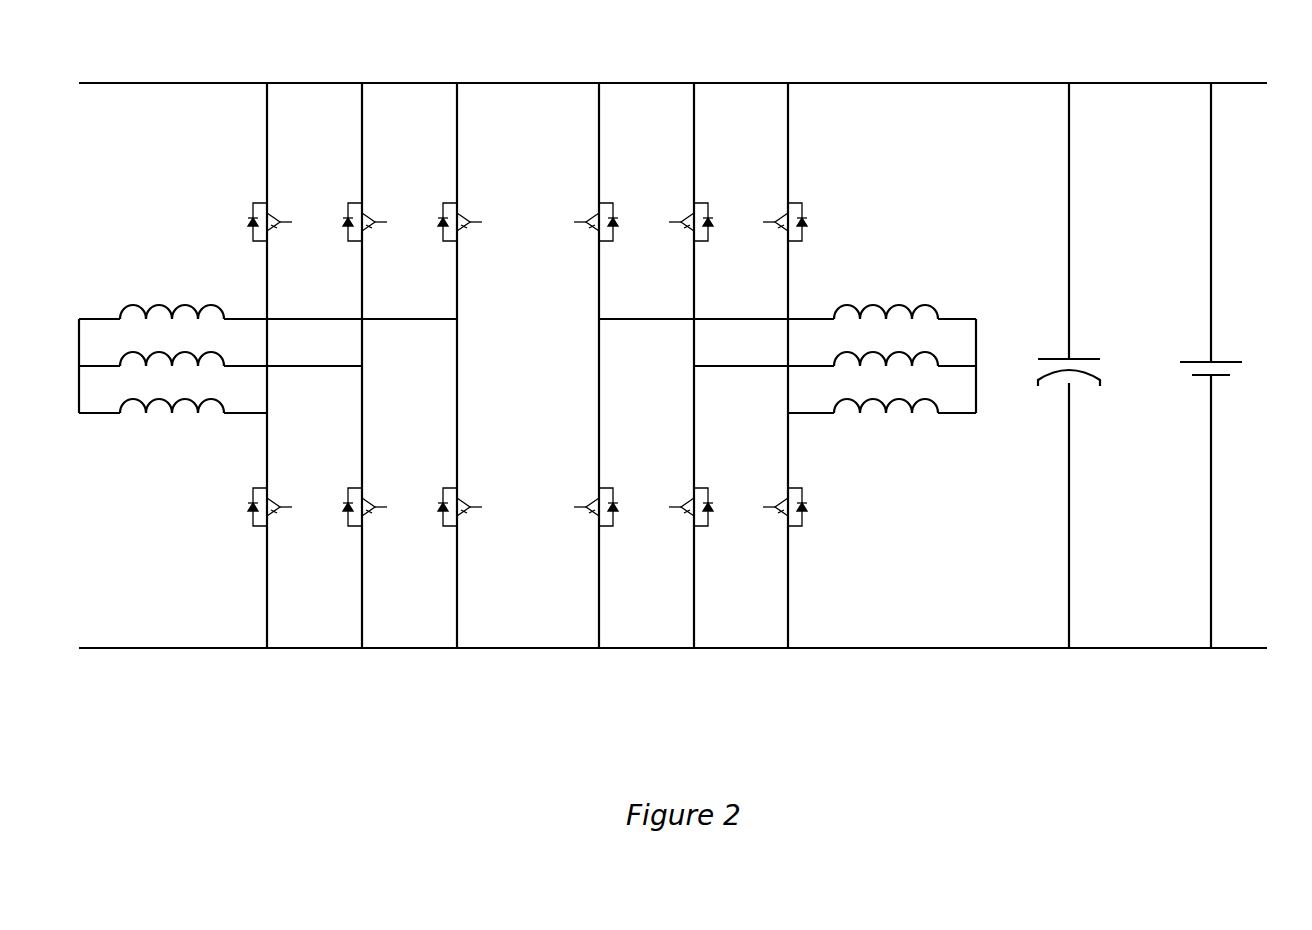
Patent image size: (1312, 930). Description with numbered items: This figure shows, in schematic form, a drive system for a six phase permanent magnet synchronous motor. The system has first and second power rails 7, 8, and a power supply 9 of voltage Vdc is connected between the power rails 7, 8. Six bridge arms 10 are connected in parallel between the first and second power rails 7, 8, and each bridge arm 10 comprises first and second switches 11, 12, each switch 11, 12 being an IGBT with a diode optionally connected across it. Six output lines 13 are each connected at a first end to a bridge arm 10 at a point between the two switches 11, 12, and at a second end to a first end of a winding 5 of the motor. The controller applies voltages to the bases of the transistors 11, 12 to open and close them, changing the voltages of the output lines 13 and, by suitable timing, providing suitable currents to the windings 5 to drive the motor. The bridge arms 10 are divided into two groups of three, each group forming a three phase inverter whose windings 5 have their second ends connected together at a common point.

The winding 5 is at (137, 285).
The first power rail 7 is at (903, 75).
The second power rail 8 is at (931, 657).
The power supply 9 is at (1224, 347).
The bridge arm 10 is at (276, 580).
The first switch 11 is at (462, 200).
The second switch 12 is at (470, 476).
The output line 13 is at (245, 422).